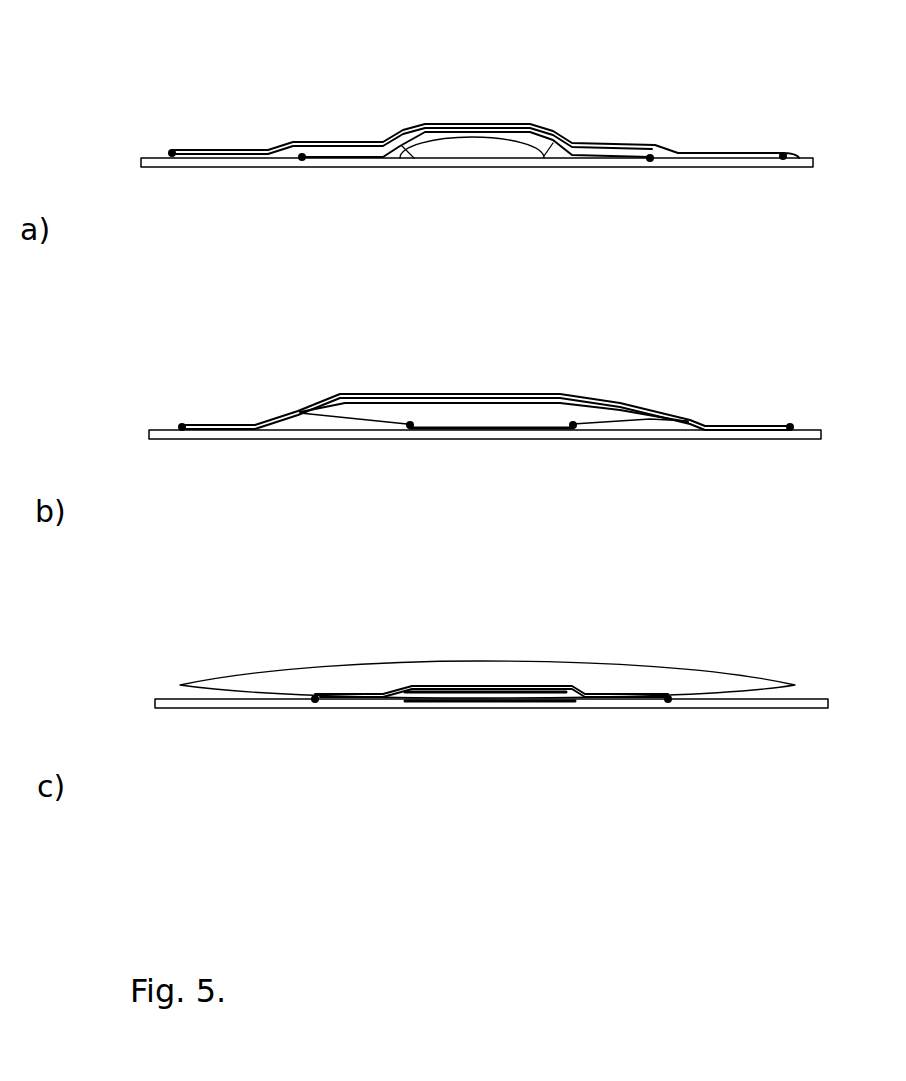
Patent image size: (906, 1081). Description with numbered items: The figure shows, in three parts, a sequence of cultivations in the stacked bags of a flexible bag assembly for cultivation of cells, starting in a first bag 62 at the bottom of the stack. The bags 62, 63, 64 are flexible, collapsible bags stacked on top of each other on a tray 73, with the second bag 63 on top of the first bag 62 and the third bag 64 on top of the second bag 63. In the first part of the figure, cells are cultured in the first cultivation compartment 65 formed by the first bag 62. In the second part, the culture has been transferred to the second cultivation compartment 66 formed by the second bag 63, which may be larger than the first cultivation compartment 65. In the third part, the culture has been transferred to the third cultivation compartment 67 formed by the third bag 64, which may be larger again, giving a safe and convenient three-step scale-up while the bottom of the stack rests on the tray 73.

The first bag 62 is at (403, 152).
The second bag 63 is at (548, 142).
The third bag 64 is at (678, 153).
The first cultivation compartment 65 is at (460, 150).
The second cultivation compartment 66 is at (495, 412).
The third cultivation compartment 67 is at (625, 683).
The tray 73 is at (813, 159).